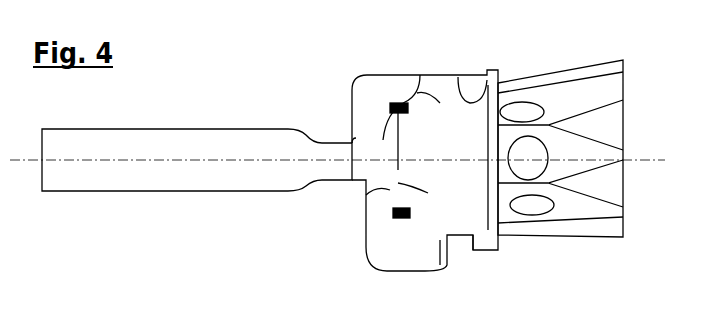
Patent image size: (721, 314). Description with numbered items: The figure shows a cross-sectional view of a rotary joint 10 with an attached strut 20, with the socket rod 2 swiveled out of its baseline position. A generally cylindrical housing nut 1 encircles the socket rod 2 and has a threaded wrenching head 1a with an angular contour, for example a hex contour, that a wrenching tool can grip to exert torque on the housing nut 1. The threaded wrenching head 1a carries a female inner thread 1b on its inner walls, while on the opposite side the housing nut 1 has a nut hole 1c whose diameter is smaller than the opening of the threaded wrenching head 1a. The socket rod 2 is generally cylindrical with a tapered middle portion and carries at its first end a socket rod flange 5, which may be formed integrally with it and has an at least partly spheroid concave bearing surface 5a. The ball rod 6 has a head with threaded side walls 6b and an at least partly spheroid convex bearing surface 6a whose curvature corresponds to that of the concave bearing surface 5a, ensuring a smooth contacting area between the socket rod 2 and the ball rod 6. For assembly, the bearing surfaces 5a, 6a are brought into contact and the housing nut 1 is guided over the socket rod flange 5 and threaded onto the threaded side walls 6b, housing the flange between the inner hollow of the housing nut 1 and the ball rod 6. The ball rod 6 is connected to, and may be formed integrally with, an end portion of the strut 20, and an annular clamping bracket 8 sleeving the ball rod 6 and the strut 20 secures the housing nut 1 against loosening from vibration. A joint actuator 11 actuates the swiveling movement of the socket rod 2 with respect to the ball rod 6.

The housing nut 1 is at (368, 237).
The threaded wrenching head 1a is at (463, 247).
The inner thread 1b is at (441, 238).
The nut hole 1c is at (335, 134).
The socket rod 2 is at (117, 192).
The socket rod flange 5 is at (387, 192).
The concave bearing surface 5a is at (397, 163).
The ball rod 6 is at (493, 207).
The convex bearing surface 6a is at (400, 183).
The threaded side walls 6b is at (435, 97).
The clamping bracket 8 is at (497, 73).
The rotary joint 10 is at (356, 63).
The joint actuator 11 is at (398, 104).
The strut 20 is at (580, 232).